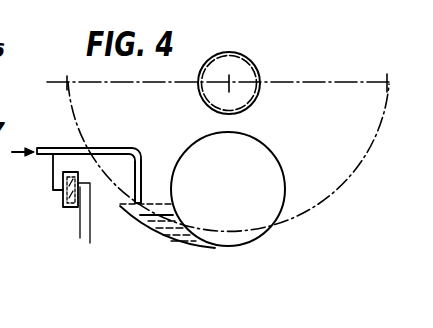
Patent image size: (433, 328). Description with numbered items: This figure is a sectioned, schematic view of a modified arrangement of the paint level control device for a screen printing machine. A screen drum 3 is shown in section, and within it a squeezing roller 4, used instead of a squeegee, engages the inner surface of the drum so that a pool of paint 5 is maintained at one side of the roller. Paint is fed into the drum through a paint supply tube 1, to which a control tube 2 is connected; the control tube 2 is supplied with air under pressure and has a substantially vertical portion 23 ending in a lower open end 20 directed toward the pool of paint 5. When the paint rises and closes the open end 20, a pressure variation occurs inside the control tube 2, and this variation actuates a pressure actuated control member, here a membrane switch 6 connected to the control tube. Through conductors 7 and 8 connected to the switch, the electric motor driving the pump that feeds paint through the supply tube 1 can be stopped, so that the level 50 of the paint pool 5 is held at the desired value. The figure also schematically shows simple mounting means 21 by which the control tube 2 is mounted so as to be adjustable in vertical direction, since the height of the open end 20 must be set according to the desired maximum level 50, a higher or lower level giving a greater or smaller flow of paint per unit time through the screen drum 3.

The paint supply tube 1 is at (250, 63).
The control tube 2 is at (52, 147).
The screen drum 3 is at (355, 186).
The squeezing roller 4 is at (220, 230).
The pool of paint 5 is at (168, 233).
The membrane switch 6 is at (68, 208).
The conductor 7 is at (83, 239).
The conductor 8 is at (90, 231).
The open end 20 is at (141, 203).
The bracket 21 is at (54, 188).
The vertical portion 23 is at (146, 159).
The level 50 is at (155, 205).